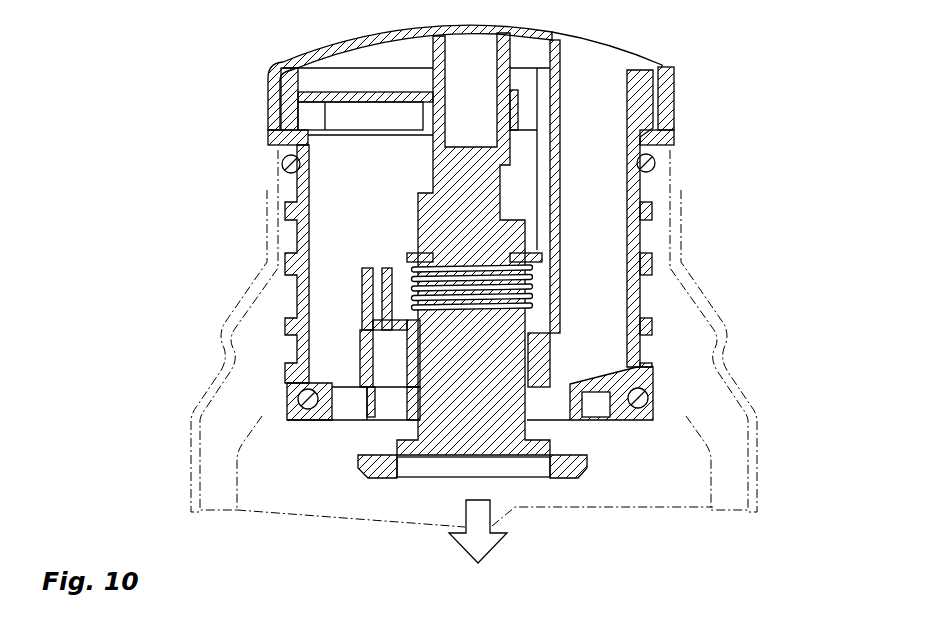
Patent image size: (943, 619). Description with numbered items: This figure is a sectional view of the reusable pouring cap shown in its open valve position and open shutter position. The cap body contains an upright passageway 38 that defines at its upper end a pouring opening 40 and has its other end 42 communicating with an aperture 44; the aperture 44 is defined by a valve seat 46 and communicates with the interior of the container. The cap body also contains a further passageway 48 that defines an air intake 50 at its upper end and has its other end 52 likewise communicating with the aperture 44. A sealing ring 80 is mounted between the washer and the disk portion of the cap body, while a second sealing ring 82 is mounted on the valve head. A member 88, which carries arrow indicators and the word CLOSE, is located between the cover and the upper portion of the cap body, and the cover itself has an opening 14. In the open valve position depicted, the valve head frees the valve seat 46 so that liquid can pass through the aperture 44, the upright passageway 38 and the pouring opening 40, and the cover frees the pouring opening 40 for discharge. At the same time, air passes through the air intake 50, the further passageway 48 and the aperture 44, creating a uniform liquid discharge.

The opening 14 is at (588, 60).
The upright passageway 38 is at (611, 255).
The pouring opening 40 is at (612, 108).
The other end 42 is at (596, 360).
The aperture 44 is at (563, 412).
The valve seat 46 is at (580, 420).
The further passageway 48 is at (395, 352).
The air intake 50 is at (377, 270).
The other end 52 is at (393, 397).
The sealing ring 80 is at (543, 307).
The sealing ring 82 is at (583, 450).
The member 88 is at (337, 92).